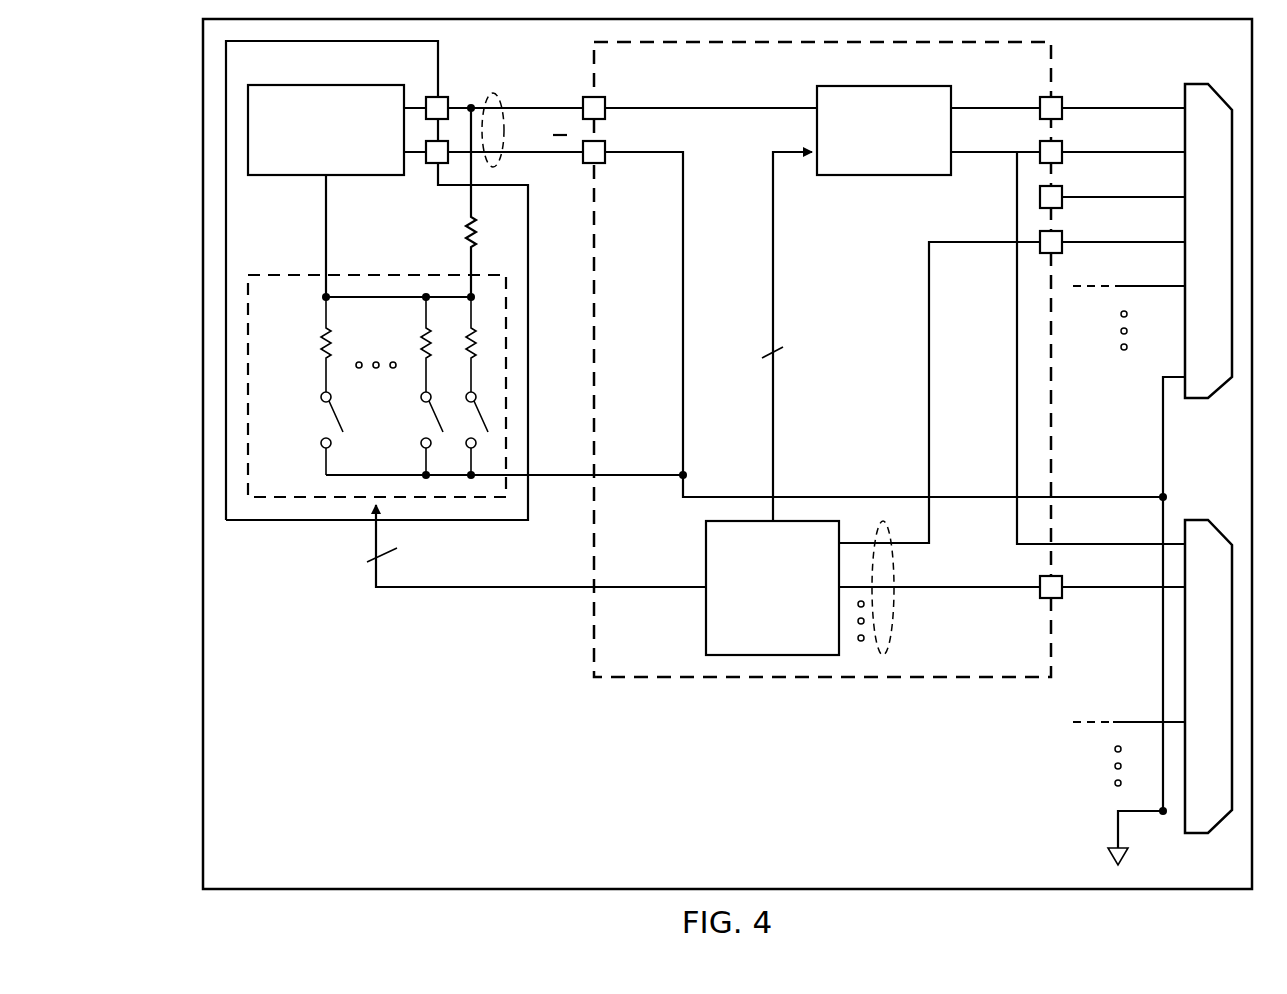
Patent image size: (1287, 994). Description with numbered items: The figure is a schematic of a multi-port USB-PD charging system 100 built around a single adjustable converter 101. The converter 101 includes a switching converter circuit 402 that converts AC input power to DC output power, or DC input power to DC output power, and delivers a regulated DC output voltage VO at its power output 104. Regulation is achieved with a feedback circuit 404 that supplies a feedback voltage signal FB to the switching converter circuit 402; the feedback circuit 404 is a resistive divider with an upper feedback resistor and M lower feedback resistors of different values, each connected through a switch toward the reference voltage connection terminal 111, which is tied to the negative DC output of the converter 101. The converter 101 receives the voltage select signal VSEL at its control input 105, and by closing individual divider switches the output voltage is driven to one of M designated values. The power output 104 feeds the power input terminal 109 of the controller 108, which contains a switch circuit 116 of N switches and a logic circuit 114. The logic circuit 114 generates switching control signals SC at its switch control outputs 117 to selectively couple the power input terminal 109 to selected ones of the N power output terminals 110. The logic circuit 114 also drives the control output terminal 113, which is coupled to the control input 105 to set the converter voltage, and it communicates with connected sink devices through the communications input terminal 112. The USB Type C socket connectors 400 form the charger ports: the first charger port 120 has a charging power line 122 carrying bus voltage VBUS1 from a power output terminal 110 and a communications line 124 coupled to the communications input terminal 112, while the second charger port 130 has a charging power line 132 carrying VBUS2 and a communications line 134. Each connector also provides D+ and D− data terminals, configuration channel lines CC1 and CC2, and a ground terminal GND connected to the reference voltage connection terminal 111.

The charging system 100 is at (203, 420).
The converter 101 is at (292, 525).
The power output 104 is at (492, 92).
The control input 105 is at (376, 570).
The controller 108 is at (863, 684).
The power input terminal 109 is at (722, 107).
The power output terminals 110 is at (995, 106).
The reference voltage connection terminal 111 is at (683, 325).
The communications input terminal 112 is at (905, 627).
The control output terminal 113 is at (660, 589).
The logic circuit 114 is at (706, 578).
The switch circuit 116 is at (885, 176).
The switch control outputs 117 is at (773, 250).
The charger port 120 is at (1128, 402).
The charging power line 122 is at (1163, 105).
The communications line 124 is at (929, 405).
The charger port 130 is at (1058, 755).
The charging power line 132 is at (1017, 520).
The communications line 134 is at (1119, 592).
The USB Type C socket connectors 400 is at (1106, 459).
The switching converter circuit 402 is at (348, 178).
The feedback circuit 404 is at (414, 268).